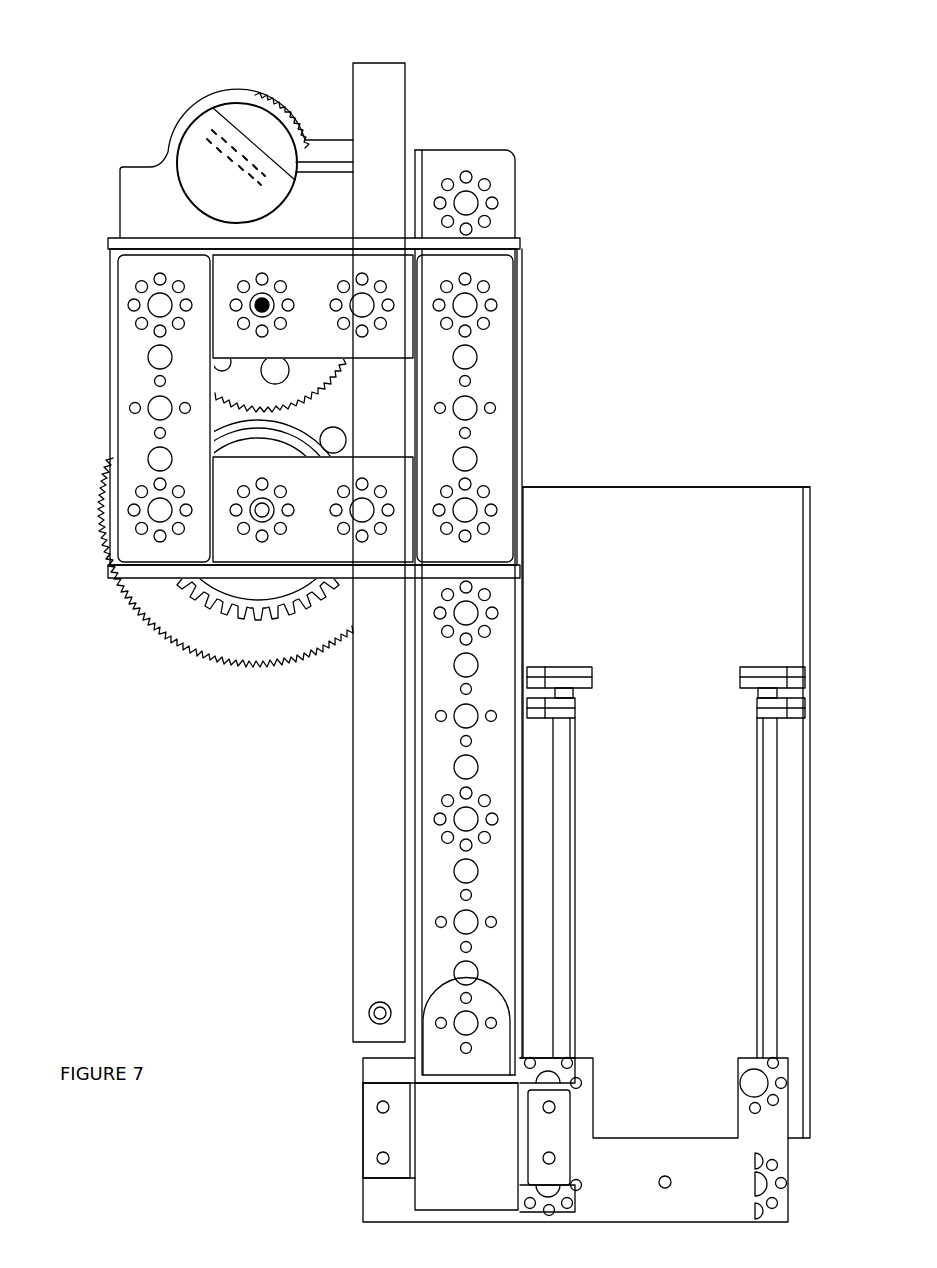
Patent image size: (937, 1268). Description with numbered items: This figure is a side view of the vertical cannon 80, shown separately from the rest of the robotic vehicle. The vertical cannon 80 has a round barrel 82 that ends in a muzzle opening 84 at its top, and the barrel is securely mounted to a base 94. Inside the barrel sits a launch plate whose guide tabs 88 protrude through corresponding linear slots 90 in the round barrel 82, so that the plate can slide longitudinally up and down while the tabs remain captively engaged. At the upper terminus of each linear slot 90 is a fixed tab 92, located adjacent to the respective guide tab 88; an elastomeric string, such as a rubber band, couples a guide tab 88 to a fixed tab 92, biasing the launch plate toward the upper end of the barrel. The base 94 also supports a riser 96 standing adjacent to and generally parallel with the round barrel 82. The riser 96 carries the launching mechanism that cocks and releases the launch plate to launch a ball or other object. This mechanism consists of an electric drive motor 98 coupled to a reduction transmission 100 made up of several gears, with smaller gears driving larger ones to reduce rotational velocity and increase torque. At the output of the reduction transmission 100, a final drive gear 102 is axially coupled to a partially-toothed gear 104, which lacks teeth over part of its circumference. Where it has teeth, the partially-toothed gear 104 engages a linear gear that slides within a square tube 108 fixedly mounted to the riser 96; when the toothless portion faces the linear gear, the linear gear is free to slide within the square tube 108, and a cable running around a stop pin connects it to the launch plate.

The vertical cannon 80 is at (684, 146).
The round barrel 82 is at (787, 537).
The muzzle opening 84 is at (662, 487).
The guide tabs 88 is at (790, 718).
The linear slots 90 is at (562, 953).
The fixed tab 92 is at (770, 667).
The base 94 is at (790, 1195).
The riser 96 is at (507, 212).
The electric drive motor 98 is at (240, 120).
The reduction transmission 100 is at (96, 789).
The final drive gear 102 is at (238, 663).
The partially-toothed gear 104 is at (308, 603).
The square tube 108 is at (353, 957).